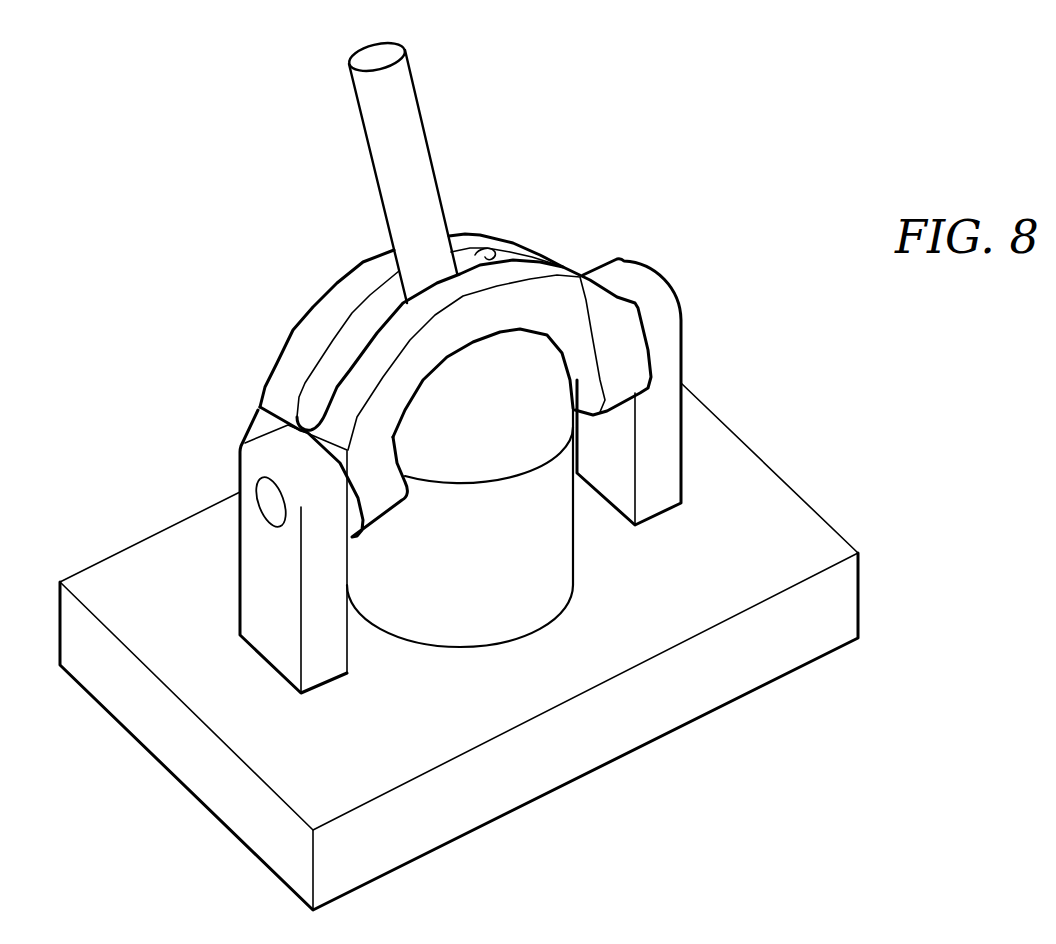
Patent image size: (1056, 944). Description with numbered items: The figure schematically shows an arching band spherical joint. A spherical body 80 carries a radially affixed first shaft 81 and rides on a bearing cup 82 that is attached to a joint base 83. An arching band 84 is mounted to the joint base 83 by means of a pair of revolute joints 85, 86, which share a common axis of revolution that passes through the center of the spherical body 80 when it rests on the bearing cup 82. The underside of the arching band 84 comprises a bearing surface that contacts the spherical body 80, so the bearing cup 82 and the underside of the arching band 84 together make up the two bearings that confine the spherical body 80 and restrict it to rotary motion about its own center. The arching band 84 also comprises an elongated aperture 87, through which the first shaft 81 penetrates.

The spherical body 80 is at (517, 353).
The first shaft 81 is at (395, 92).
The bearing cup 82 is at (560, 562).
The joint base 83 is at (803, 540).
The arching band 84 is at (313, 330).
The revolute joint 85 is at (262, 488).
The revolute joint 86 is at (684, 309).
The elongated aperture 87 is at (487, 247).